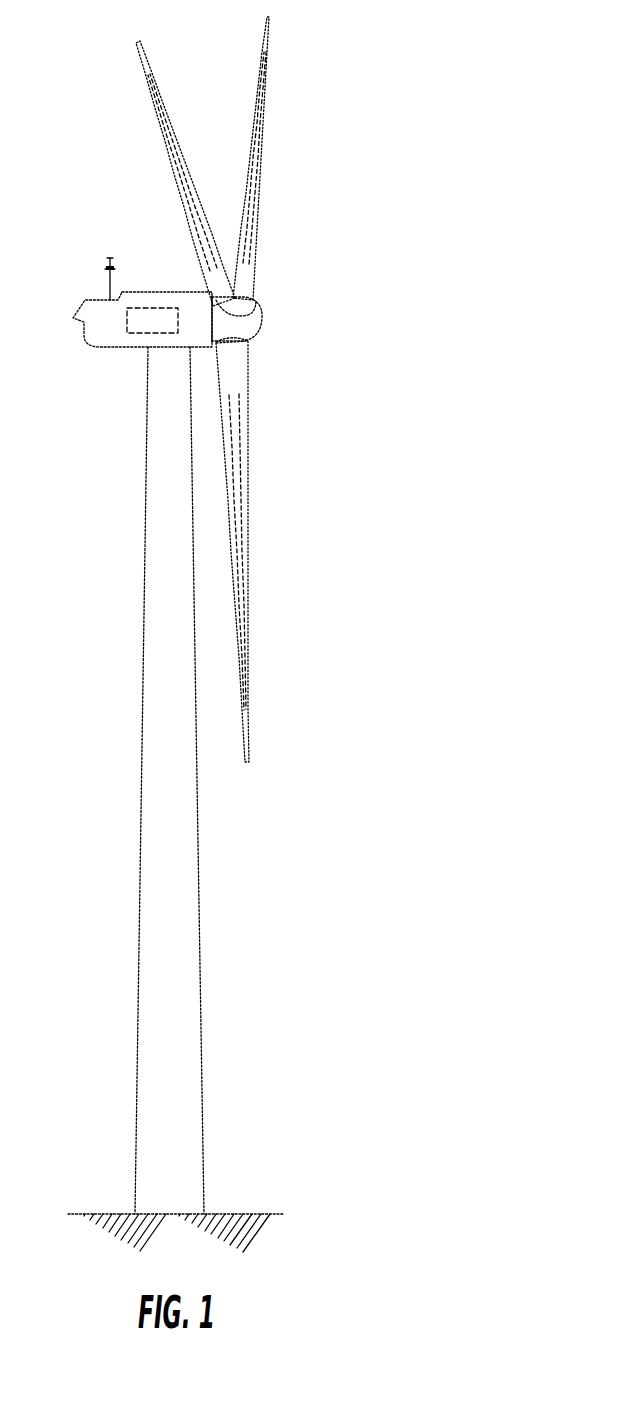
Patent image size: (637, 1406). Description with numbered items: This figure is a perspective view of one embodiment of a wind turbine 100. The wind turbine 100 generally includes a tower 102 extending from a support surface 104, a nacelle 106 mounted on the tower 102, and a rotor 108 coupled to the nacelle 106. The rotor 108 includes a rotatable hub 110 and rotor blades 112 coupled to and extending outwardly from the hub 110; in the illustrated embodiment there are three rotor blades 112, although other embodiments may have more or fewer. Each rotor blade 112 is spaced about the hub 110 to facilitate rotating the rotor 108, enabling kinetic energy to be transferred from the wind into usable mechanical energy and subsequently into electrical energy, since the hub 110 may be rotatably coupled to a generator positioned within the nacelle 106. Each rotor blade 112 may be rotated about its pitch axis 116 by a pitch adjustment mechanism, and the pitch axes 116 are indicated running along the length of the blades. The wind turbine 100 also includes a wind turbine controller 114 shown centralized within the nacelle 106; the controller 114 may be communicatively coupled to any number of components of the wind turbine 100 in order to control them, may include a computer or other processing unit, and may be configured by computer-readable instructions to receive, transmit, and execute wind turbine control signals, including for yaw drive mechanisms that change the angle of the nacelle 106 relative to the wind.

The wind turbine 100 is at (410, 113).
The tower 102 is at (180, 852).
The support surface 104 is at (112, 1213).
The nacelle 106 is at (119, 347).
The rotor 108 is at (306, 272).
The rotatable hub 110 is at (262, 313).
The rotor blade 112 is at (248, 137).
The wind turbine controller 114 is at (163, 306).
The pitch axis 116 is at (176, 185).